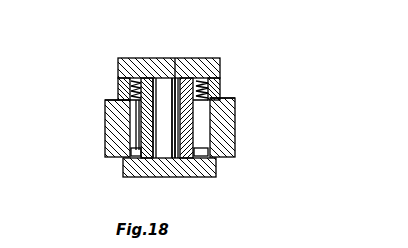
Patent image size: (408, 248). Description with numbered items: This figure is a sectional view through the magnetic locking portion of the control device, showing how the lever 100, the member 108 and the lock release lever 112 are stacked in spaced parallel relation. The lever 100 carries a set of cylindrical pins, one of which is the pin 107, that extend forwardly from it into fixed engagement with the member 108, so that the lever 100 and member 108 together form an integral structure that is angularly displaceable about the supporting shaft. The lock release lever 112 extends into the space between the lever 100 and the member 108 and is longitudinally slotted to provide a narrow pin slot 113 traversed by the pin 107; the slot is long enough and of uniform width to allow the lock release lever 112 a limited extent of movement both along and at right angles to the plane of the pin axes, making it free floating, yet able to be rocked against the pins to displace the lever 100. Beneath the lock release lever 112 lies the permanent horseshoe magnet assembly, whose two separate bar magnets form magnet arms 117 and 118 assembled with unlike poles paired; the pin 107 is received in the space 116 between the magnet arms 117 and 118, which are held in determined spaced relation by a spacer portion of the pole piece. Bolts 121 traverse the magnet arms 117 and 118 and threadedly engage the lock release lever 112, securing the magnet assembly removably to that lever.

The lever 100 is at (202, 58).
The pin 107 is at (175, 58).
The member 108 is at (216, 170).
The lock release lever 112 is at (212, 92).
The pin slot 113 is at (124, 88).
The space 116 is at (135, 140).
The magnet arm 117 is at (113, 132).
The magnet arm 118 is at (225, 134).
The bolts 121 is at (120, 112).